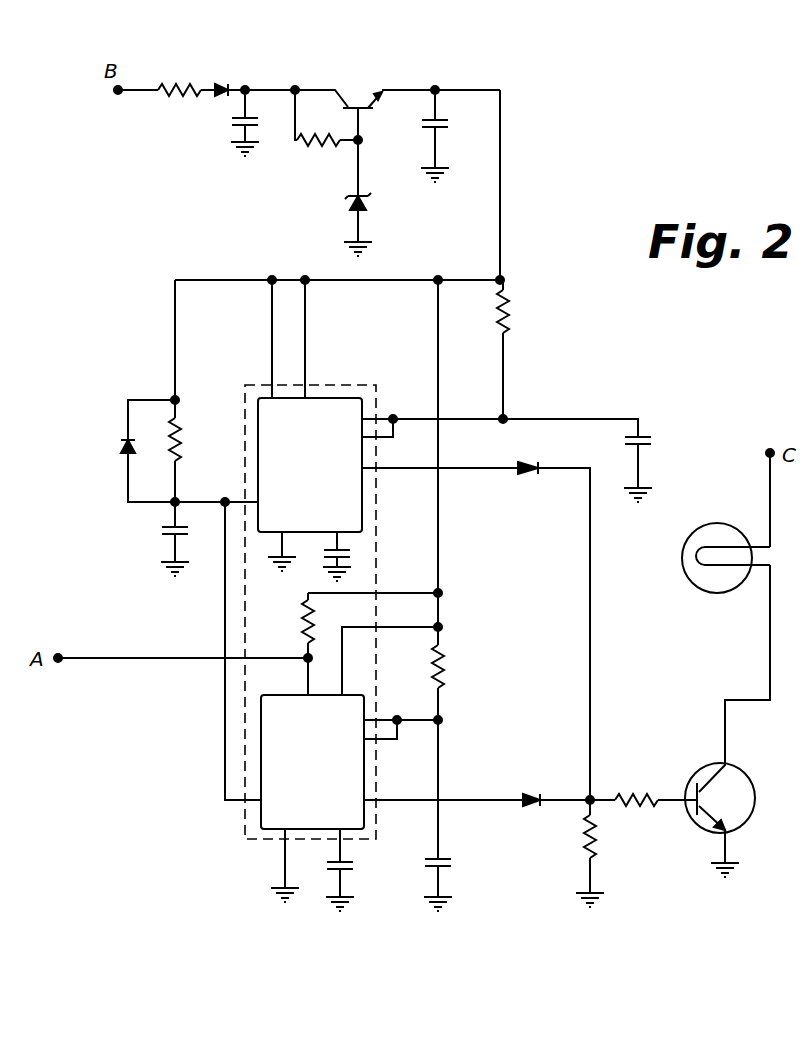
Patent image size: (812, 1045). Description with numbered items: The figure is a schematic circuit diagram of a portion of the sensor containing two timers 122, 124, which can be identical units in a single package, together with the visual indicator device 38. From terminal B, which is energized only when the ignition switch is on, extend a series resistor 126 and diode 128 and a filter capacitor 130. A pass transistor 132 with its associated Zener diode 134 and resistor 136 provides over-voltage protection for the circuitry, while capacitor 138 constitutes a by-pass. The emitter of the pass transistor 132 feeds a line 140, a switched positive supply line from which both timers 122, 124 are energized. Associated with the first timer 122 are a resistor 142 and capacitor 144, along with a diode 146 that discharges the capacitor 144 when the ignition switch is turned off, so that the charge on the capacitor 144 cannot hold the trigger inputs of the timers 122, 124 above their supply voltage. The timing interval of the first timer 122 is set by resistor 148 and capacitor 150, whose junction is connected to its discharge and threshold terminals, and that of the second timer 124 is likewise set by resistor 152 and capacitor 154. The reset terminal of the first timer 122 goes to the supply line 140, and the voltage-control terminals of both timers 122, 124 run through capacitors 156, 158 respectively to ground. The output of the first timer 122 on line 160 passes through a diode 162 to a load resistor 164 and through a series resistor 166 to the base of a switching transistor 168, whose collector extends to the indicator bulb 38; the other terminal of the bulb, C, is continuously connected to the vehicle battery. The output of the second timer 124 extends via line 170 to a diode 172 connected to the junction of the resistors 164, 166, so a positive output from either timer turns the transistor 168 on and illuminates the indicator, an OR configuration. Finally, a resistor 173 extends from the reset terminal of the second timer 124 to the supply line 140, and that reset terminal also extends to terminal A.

The visual indicator device 38 is at (716, 532).
The timer 122 is at (310, 484).
The timer 124 is at (312, 798).
The series resistor 126 is at (174, 84).
The diode 128 is at (222, 86).
The filter capacitor 130 is at (218, 124).
The pass transistor 132 is at (355, 92).
The Zener diode 134 is at (342, 207).
The resistor 136 is at (327, 152).
The capacitor 138 is at (444, 137).
The line 140 is at (503, 212).
The resistor 142 is at (188, 444).
The capacitor 144 is at (156, 538).
The diode 146 is at (118, 446).
The resistor 148 is at (517, 312).
The capacitor 150 is at (644, 428).
The resistor 152 is at (450, 668).
The capacitor 154 is at (466, 860).
The capacitor 156 is at (360, 546).
The capacitor 158 is at (362, 872).
The line 160 is at (466, 472).
The diode 162 is at (542, 476).
The load resistor 164 is at (604, 855).
The series resistor 166 is at (644, 790).
The switching transistor 168 is at (744, 772).
The line 170 is at (478, 798).
The diode 172 is at (540, 786).
The resistor 173 is at (300, 628).